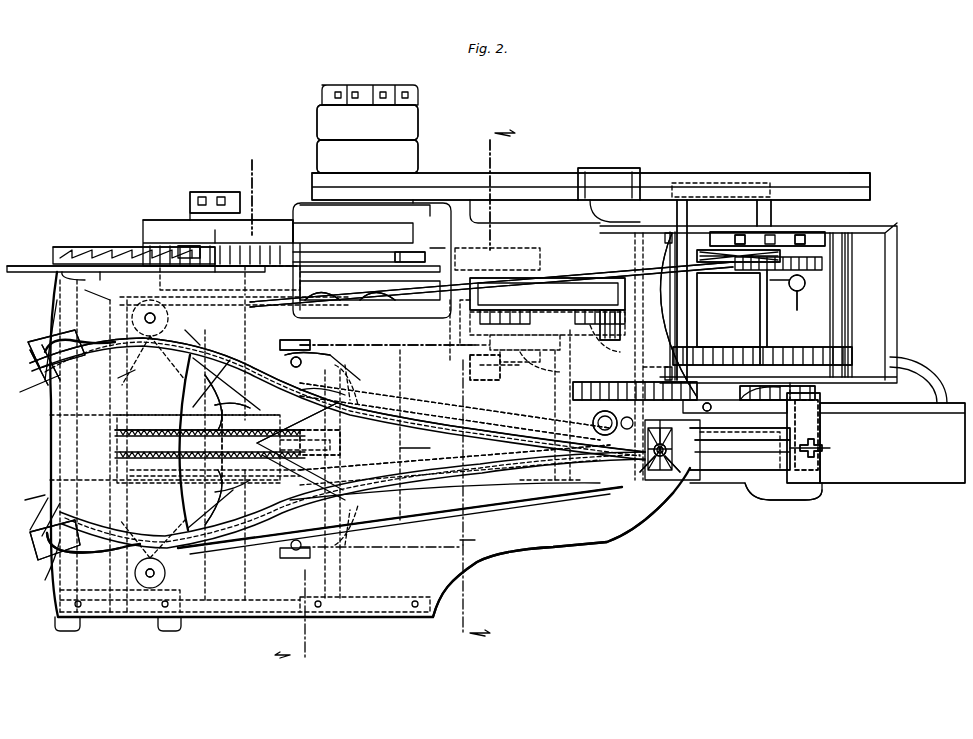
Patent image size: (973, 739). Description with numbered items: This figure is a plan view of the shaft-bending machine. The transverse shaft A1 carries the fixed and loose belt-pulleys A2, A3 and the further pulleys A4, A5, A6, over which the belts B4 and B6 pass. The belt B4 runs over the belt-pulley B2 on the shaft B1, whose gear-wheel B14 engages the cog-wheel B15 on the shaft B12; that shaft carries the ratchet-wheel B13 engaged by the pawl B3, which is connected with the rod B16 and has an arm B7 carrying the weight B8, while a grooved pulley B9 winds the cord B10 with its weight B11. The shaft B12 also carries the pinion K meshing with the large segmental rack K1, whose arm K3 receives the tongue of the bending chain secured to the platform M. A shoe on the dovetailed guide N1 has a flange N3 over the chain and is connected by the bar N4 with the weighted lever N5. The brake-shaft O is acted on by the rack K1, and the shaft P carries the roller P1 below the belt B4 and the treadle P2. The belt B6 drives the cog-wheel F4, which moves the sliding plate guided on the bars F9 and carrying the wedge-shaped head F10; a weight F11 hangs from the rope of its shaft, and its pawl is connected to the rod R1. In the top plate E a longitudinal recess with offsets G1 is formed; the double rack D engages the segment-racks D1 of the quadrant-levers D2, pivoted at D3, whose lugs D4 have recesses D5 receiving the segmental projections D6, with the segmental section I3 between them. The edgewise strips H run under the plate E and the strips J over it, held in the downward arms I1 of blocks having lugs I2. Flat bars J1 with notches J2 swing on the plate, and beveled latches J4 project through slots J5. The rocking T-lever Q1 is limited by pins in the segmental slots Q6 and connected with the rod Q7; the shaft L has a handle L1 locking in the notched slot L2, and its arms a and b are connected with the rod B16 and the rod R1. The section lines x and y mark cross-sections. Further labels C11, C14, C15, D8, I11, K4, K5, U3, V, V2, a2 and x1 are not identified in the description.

The bracket C11 is at (190, 213).
The bar C14 is at (143, 243).
The notched slot L2 is at (95, 255).
The handle L1 is at (185, 250).
The rod Q7 is at (35, 268).
The segmental slots Q6 is at (165, 282).
The arm a is at (97, 298).
The arc D8 is at (50, 316).
The pivots D3 is at (157, 318).
The metal strips or bars J is at (191, 333).
The upwardly-projecting lugs D4 is at (45, 350).
The link I11 is at (45, 362).
The arms I1 is at (48, 378).
The arm b is at (126, 377).
The quadrant-lever D2 is at (210, 402).
The segment-rack D1 is at (238, 494).
The brace C15 is at (293, 418).
The offset G1 is at (270, 352).
The slot J5 is at (293, 444).
The beveled bolt or latch J4 is at (304, 444).
The flat bar J1 is at (425, 382).
The notches J2 is at (450, 448).
The lever N5 is at (508, 425).
The metal strips or bars H is at (337, 434).
The slot a2 is at (415, 440).
The longitudinal bars F9 is at (400, 498).
The wedge-shaped head F10 is at (326, 442).
The rod R1 is at (485, 367).
The weight F11 is at (575, 288).
The rod B16 is at (605, 280).
The belt B6 is at (547, 294).
The cog-wheel F4 is at (617, 325).
The shaft P is at (630, 348).
The segmental rack K1 is at (603, 390).
The pivot V2 is at (660, 440).
The flange N3 is at (670, 439).
The dovetailed guide N1 is at (720, 407).
The pinion K is at (822, 423).
The link or bar N4 is at (742, 428).
The block U3 is at (740, 449).
The lever V is at (660, 472).
The top plate E is at (553, 555).
The treadle P2 is at (758, 490).
The arm K3 is at (812, 414).
The slide K5 is at (822, 440).
The screw K4 is at (823, 452).
The platform or table M is at (892, 443).
The segmental section I3 is at (50, 437).
The shaft L is at (112, 447).
The double rack D is at (247, 446).
The recesses D5 is at (215, 500).
The lugs I2 is at (83, 535).
The segmental projections D6 is at (48, 562).
The brake-shaft O is at (699, 214).
The belt-pulley A5 is at (438, 240).
The rocking T-lever Q1 is at (409, 260).
The shaft A1 is at (388, 305).
The belt-pulley A6 is at (322, 304).
The belt-pulley A4 is at (420, 172).
The loose belt-pulley A3 is at (367, 122).
The fixed belt-pulley A2 is at (367, 156).
The belt B4 is at (591, 186).
The roller P1 is at (598, 178).
The belt-pulley B2 is at (869, 186).
The shaft B1 is at (772, 214).
The weight B11 is at (767, 239).
The cord B10 is at (745, 237).
The grooved pulley B9 is at (807, 239).
The pawl B3 is at (720, 262).
The arm B7 is at (795, 290).
The ratchet-wheel B13 is at (814, 297).
The shaft B12 is at (757, 318).
The weight B8 is at (790, 318).
The cog-wheel B15 is at (710, 350).
The gear-wheel B14 is at (785, 352).
The section line x is at (469, 382).
The axis x1 is at (376, 447).
The section line y is at (273, 409).